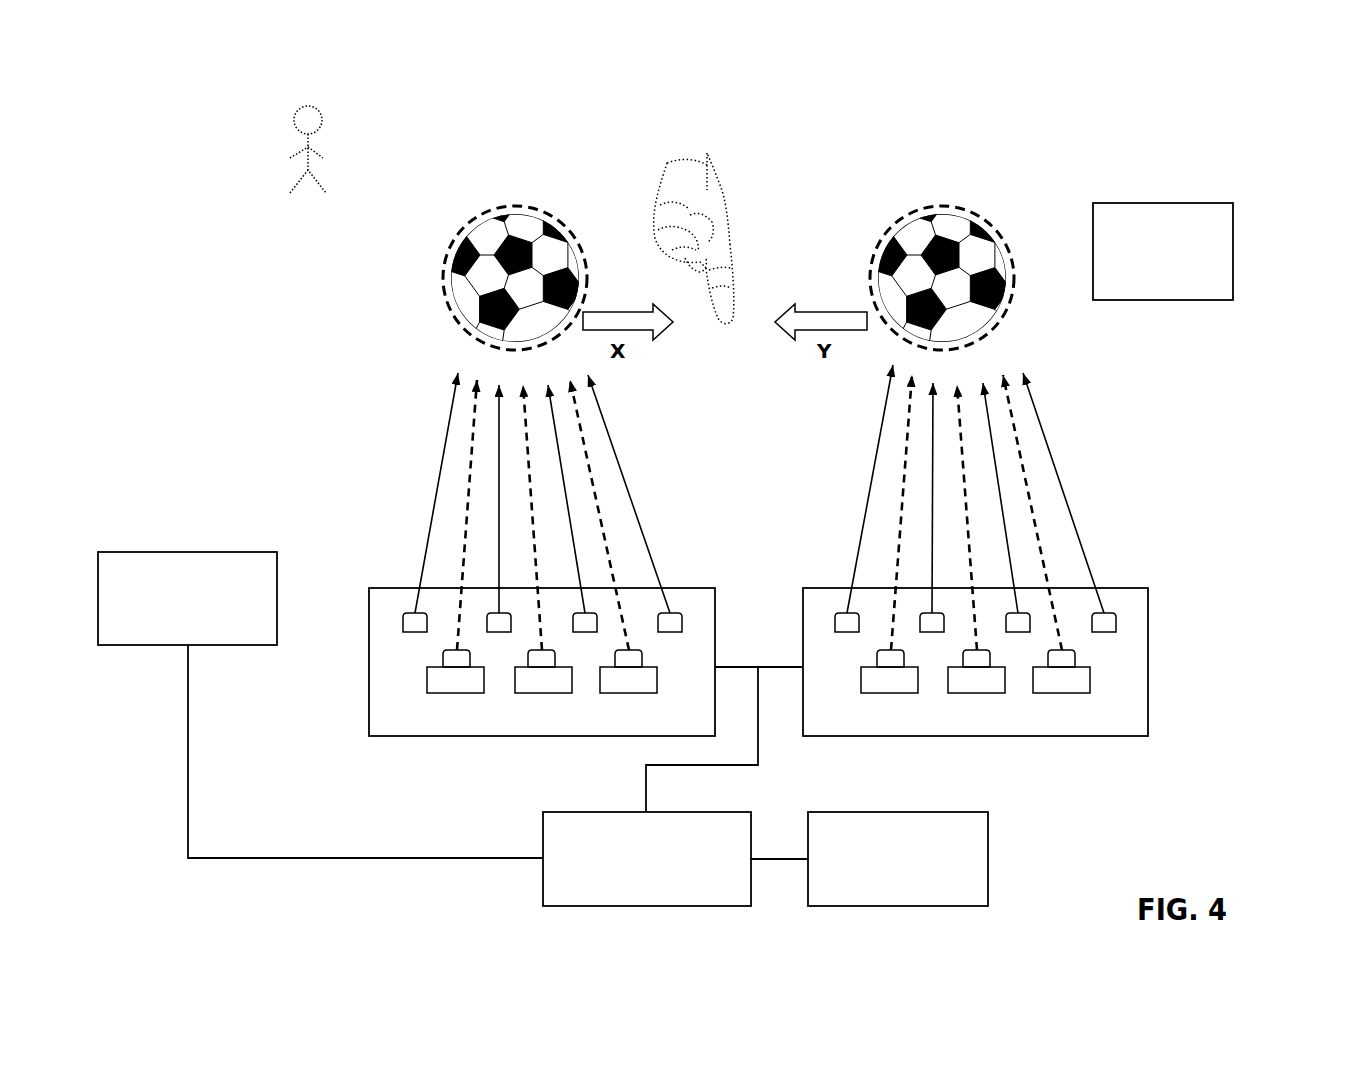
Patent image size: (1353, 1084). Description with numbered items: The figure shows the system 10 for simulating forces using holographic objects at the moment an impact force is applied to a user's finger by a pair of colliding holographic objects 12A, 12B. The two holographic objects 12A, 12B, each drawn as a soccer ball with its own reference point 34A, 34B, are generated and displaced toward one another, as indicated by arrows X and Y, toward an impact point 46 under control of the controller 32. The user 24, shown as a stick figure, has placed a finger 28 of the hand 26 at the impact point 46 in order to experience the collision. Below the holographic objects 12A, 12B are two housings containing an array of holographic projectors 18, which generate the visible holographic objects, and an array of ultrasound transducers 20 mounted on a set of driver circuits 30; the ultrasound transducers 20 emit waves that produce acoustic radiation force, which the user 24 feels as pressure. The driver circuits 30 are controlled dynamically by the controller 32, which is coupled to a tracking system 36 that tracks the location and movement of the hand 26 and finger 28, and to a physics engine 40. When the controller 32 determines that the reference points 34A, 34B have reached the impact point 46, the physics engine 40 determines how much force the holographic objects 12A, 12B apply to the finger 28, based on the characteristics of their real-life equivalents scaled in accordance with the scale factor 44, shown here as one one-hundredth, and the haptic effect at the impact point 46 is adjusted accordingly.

The system for simulating forces using holographic objects 10 is at (1118, 467).
The holographic object 12A is at (457, 258).
The holographic object 12B is at (903, 234).
The holographic projectors 18 is at (399, 622).
The ultrasound transducers 20 is at (427, 661).
The user 24 is at (298, 151).
The hand 26 is at (707, 192).
The finger 28 is at (727, 310).
The driver circuits 30 is at (418, 688).
The controller 32 is at (675, 859).
The reference point 34A is at (578, 234).
The reference point 34B is at (1013, 291).
The tracking system 36 is at (320, 705).
The physics engine 40 is at (898, 859).
The scale factor 44 is at (1241, 211).
The impact point 46 is at (707, 353).